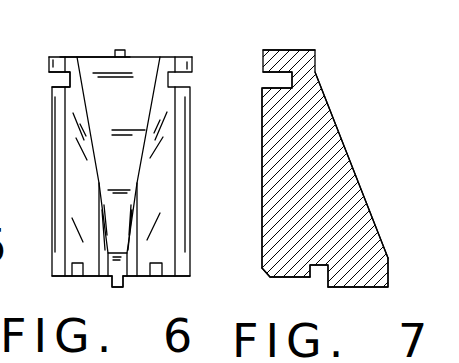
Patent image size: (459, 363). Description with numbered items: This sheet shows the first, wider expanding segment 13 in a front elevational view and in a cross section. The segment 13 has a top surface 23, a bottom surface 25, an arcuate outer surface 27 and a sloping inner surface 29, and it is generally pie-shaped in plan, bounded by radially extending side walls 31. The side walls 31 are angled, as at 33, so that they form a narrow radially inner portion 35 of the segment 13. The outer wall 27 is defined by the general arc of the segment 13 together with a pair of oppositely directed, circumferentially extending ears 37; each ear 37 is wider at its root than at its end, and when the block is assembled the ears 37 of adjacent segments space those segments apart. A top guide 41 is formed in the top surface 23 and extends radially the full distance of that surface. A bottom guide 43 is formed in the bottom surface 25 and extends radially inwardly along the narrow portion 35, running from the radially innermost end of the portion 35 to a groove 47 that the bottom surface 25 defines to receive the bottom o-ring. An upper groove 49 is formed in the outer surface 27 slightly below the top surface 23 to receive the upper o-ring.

In FIG. 6, the expanding segment 13 is at (170, 44).
In FIG. 7, the expanding segment 13 is at (338, 69).
In FIG. 6, the top surface 23 is at (88, 57).
In FIG. 7, the top surface 23 is at (270, 50).
In FIG. 6, the bottom surface 25 is at (90, 278).
In FIG. 7, the bottom surface 25 is at (287, 278).
In FIG. 7, the arcuate outer surface 27 is at (262, 160).
In FIG. 7, the sloping inner surface 29 is at (348, 148).
In FIG. 6, the side wall 31 is at (78, 180).
In FIG. 6, the angle of side wall 33 is at (135, 255).
In FIG. 6, the radially inner portion 35 is at (118, 235).
In FIG. 6, the ear 37 is at (58, 139).
In FIG. 6, the top guide 41 is at (127, 53).
In FIG. 6, the bottom guide 43 is at (125, 282).
In FIG. 7, the bottom guide 43 is at (390, 270).
In FIG. 6, the groove 47 is at (73, 273).
In FIG. 7, the groove 47 is at (315, 270).
In FIG. 6, the upper groove 49 is at (58, 78).
In FIG. 7, the upper groove 49 is at (267, 75).